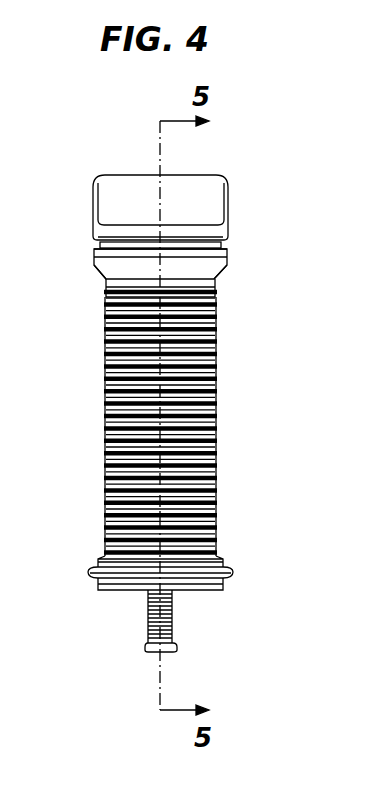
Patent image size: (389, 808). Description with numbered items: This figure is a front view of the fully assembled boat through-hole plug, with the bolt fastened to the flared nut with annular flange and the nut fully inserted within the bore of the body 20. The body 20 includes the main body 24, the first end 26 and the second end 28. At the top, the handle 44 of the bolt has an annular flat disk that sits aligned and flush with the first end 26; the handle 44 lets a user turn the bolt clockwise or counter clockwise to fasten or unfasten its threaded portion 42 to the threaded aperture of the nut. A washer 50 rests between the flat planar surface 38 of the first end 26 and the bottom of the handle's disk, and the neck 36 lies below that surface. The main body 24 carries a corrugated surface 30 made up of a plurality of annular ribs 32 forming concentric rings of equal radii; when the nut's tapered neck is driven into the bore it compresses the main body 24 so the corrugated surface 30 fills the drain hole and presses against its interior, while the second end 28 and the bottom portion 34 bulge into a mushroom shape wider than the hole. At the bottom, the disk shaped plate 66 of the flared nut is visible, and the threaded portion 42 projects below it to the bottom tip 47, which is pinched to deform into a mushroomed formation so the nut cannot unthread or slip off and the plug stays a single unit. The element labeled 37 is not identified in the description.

The body 20 is at (267, 381).
The main body 24 is at (116, 423).
The first end 26 is at (228, 255).
The second end 28 is at (235, 580).
The corrugated surface 30 is at (217, 335).
The annular ribs 32 is at (116, 342).
The bottom portion 34 is at (228, 556).
The neck 36 is at (103, 273).
The ring 37 is at (208, 283).
The flat planar surface 38 is at (94, 250).
The threaded portion 42 is at (148, 609).
The handle 44 is at (215, 197).
The bottom tip 47 is at (145, 645).
The washer 50 is at (225, 245).
The disk shaped plate 66 is at (113, 587).